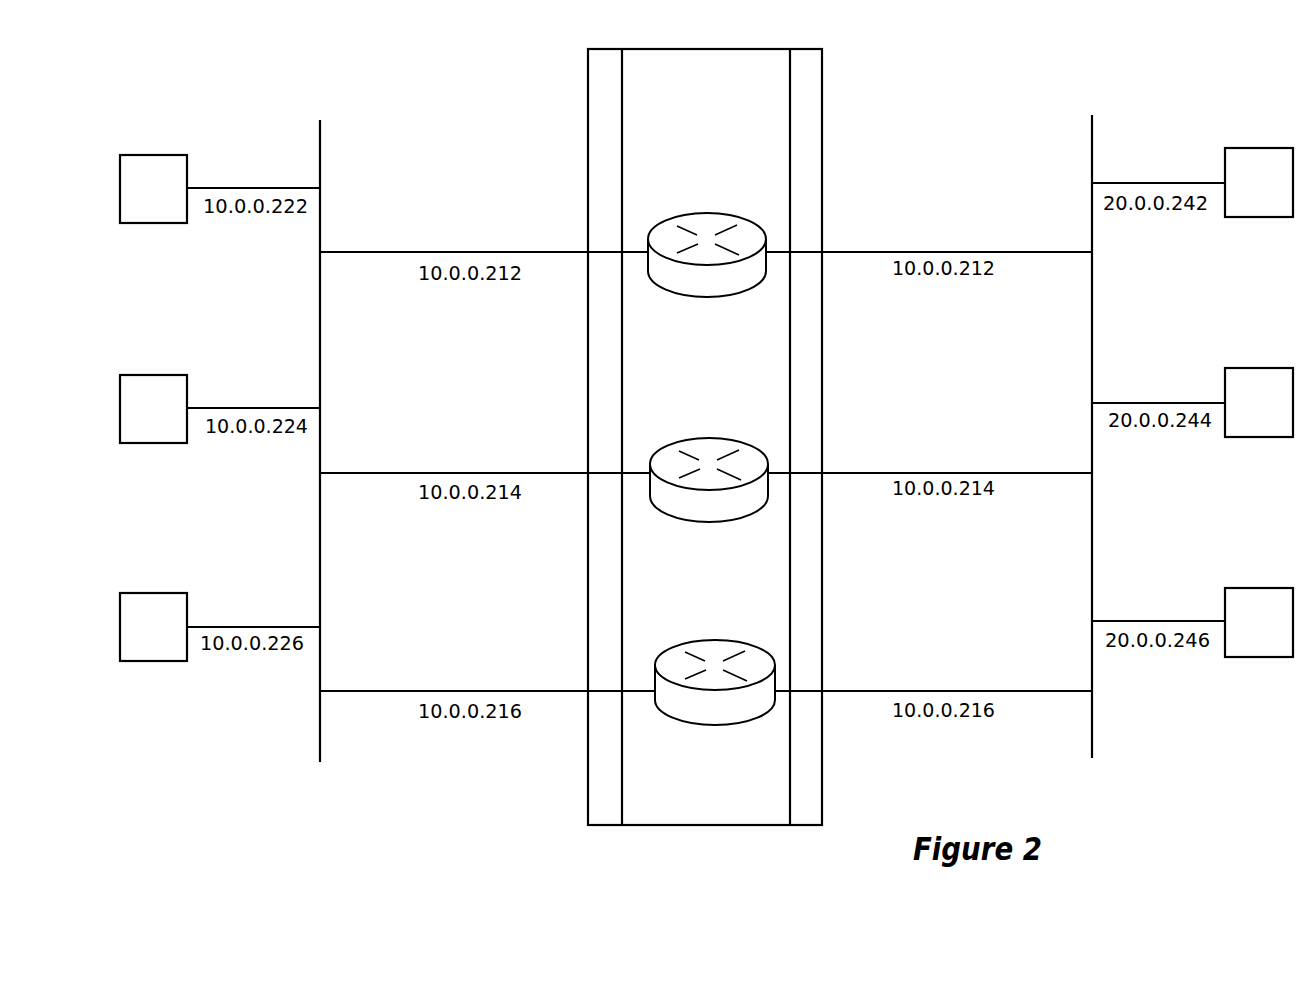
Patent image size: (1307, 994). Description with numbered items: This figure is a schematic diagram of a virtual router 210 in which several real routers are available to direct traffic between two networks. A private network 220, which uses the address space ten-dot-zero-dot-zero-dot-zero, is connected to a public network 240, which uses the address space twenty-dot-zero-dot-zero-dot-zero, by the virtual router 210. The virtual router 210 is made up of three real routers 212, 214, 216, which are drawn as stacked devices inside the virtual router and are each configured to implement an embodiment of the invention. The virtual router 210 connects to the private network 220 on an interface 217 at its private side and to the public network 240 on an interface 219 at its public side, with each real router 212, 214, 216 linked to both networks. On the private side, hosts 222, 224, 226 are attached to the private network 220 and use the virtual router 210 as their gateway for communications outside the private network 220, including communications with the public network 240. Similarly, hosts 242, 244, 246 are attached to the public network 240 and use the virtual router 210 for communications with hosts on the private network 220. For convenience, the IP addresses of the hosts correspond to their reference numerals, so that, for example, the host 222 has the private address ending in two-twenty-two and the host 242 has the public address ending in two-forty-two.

The virtual router 210 is at (705, 423).
The real router 212 is at (706, 214).
The real router 214 is at (716, 439).
The real router 216 is at (715, 641).
The interface 217 is at (487, 400).
The interface 219 is at (929, 390).
The private network 220 is at (320, 312).
The host 222 is at (220, 189).
The host 224 is at (220, 409).
The host 226 is at (220, 627).
The public network 240 is at (1092, 328).
The host 242 is at (1192, 182).
The host 244 is at (1192, 402).
The host 246 is at (1192, 622).